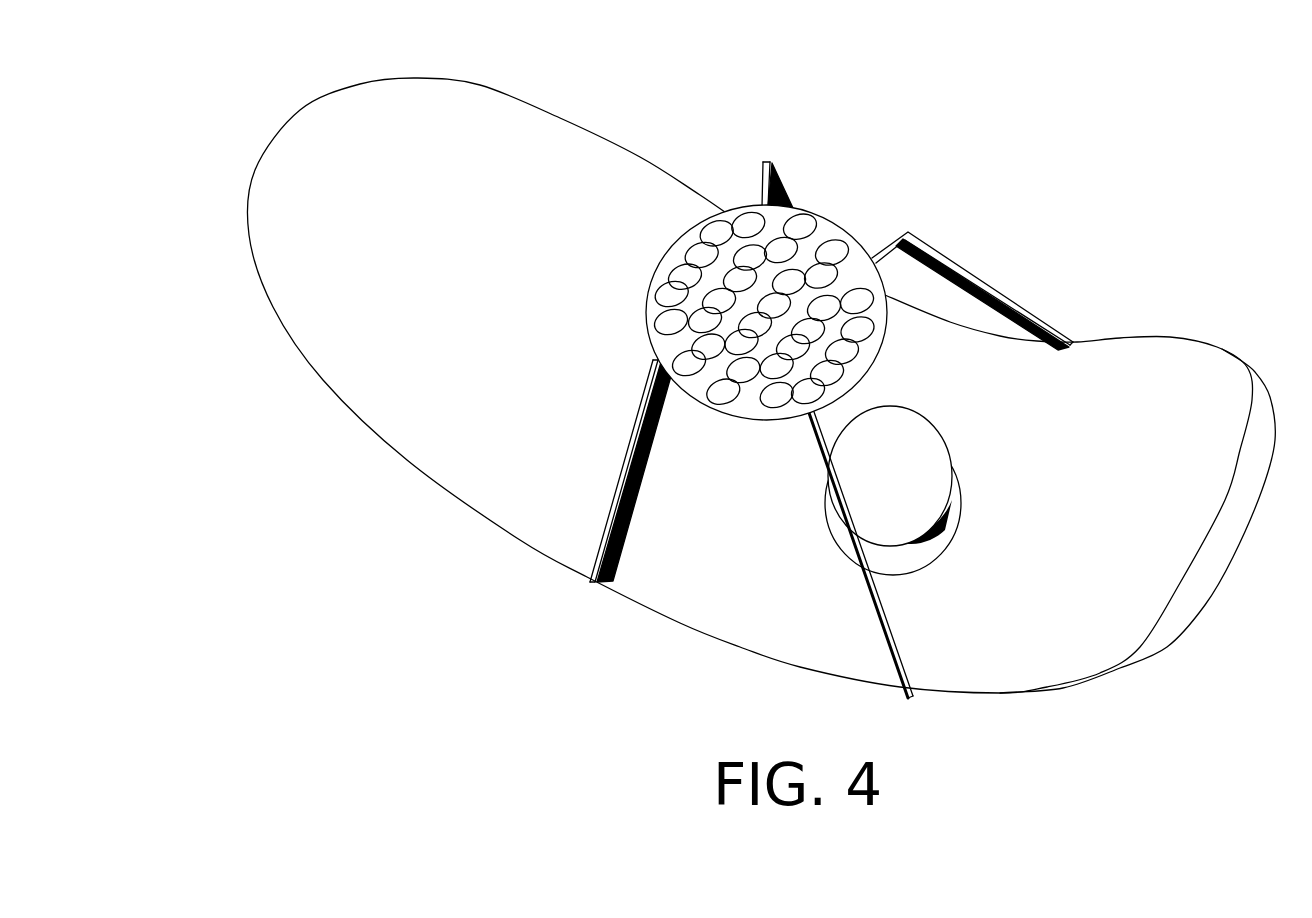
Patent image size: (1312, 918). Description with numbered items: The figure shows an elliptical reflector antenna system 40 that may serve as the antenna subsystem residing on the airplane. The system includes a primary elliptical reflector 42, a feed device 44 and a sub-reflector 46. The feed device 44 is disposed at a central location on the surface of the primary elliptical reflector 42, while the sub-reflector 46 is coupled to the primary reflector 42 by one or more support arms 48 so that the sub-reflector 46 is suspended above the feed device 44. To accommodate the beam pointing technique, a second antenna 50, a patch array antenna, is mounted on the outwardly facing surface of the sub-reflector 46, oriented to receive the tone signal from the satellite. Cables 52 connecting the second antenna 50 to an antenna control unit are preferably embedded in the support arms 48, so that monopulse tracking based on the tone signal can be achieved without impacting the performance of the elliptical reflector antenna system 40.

The elliptical reflector antenna system 40 is at (734, 374).
The primary elliptical reflector 42 is at (526, 101).
The feed device 44 is at (899, 489).
The sub-reflector 46 is at (663, 254).
The support arms 48 is at (678, 623).
The second antenna 50 is at (831, 221).
The cables 52 is at (1022, 289).